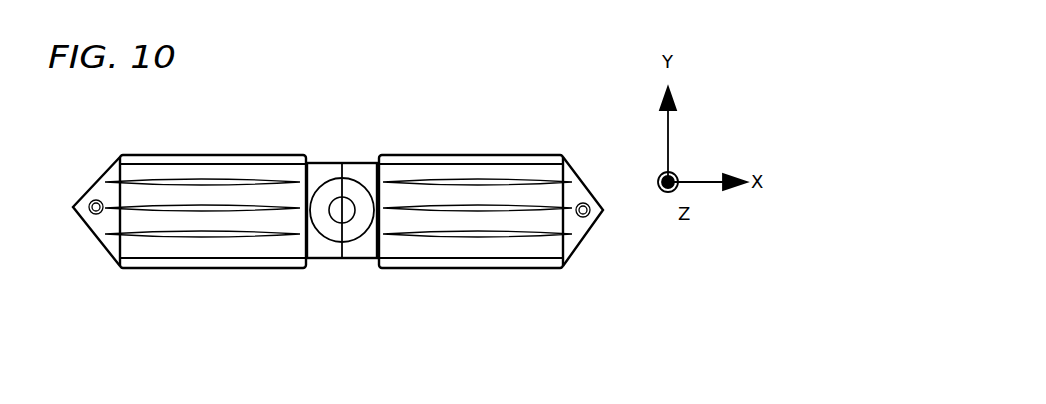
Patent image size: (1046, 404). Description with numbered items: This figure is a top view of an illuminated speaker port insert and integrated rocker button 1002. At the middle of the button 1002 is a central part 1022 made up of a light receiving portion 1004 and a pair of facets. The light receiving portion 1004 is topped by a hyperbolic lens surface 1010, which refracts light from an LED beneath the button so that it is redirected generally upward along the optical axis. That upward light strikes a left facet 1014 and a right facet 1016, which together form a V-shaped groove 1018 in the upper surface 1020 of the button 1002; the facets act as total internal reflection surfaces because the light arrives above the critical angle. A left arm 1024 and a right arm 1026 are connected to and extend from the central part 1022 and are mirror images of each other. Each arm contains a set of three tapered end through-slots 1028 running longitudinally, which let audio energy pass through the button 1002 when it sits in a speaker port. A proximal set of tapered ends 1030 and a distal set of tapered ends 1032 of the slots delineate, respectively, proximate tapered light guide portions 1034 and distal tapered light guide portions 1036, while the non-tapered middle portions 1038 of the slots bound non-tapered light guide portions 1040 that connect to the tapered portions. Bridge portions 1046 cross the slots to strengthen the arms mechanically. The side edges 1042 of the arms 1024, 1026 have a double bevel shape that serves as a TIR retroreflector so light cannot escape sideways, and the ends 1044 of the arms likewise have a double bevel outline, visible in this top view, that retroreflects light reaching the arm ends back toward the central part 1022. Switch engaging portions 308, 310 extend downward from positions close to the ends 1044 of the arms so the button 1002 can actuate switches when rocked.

The illuminated speaker port insert and integrated rocker button 1002 is at (371, 385).
The light receiving portion 1004 is at (343, 212).
The hyperbolic lens surface 1010 is at (339, 166).
The left facet 1014 is at (306, 162).
The right facet 1016 is at (355, 160).
The V-shaped groove 1018 is at (340, 287).
The upper surface 1020 is at (540, 158).
The central part 1022 is at (306, 259).
The left arm 1024 is at (145, 154).
The right arm 1026 is at (510, 166).
The tapered end through-slots 1028 is at (487, 226).
The proximal tapered ends 1030 is at (395, 190).
The distal tapered ends 1032 is at (565, 205).
The proximate tapered light guide portions 1034 is at (278, 180).
The distal tapered light guide portions 1036 is at (119, 173).
The non-tapered middle portions 1038 is at (179, 173).
The non-tapered light guide portions 1040 is at (432, 256).
The side edges 1042 is at (190, 157).
The ends 1044 is at (86, 192).
The bridge portions 1046 is at (222, 162).
The switch engaging portion 308 is at (82, 214).
The switch engaging portion 310 is at (593, 190).